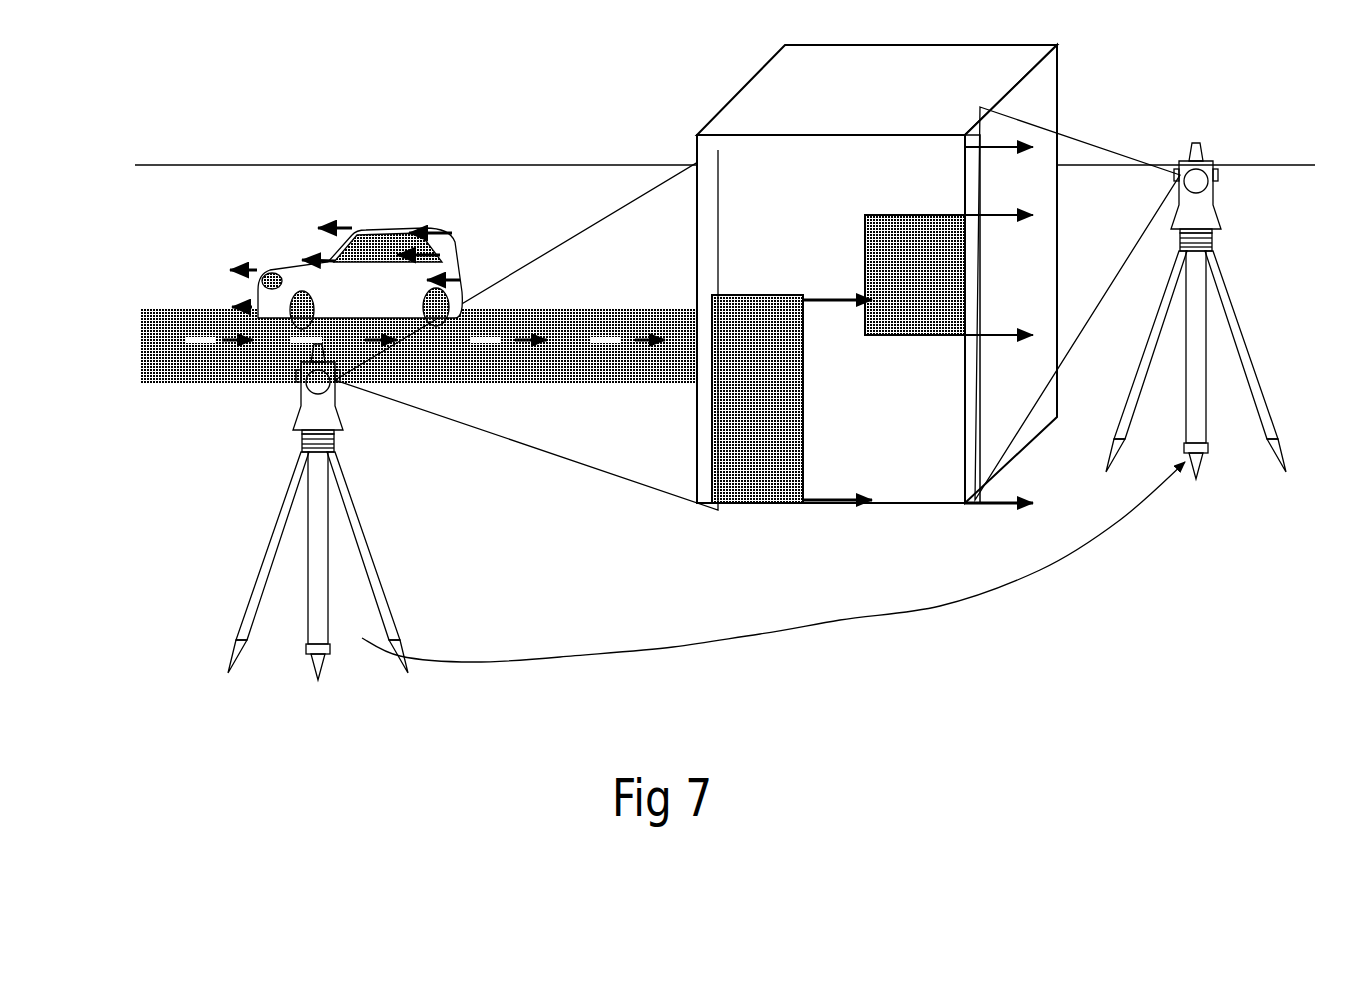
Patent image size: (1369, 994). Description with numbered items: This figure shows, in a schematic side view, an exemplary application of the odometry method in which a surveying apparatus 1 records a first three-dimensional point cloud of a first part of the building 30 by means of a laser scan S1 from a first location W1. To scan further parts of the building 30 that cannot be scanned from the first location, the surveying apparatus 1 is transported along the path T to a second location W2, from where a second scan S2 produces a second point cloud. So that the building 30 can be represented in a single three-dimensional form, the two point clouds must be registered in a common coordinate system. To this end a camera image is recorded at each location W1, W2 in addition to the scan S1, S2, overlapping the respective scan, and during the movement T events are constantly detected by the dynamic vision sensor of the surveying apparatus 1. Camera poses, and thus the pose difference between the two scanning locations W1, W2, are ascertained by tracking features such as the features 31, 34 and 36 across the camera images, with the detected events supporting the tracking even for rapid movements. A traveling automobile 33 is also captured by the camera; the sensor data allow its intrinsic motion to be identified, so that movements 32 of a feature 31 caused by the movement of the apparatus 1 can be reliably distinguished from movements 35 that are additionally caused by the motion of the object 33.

The surveying apparatus 1 is at (300, 408).
The building 30 is at (877, 274).
The feature 31 is at (916, 295).
The movements of a feature 32 is at (959, 191).
The traveling automobile 33 is at (320, 263).
The feature 34 is at (360, 226).
The movements of a feature caused by object movement 35 is at (362, 167).
The feature 36 is at (421, 363).
The first laser scan S1 is at (526, 335).
The second laser scan S2 is at (1118, 287).
The path T is at (773, 564).
The first location W1 is at (348, 690).
The second location W2 is at (1268, 513).